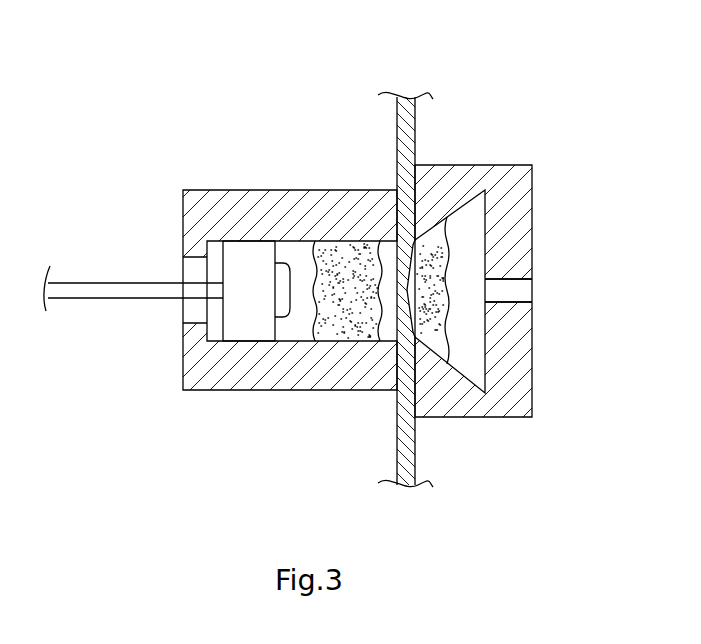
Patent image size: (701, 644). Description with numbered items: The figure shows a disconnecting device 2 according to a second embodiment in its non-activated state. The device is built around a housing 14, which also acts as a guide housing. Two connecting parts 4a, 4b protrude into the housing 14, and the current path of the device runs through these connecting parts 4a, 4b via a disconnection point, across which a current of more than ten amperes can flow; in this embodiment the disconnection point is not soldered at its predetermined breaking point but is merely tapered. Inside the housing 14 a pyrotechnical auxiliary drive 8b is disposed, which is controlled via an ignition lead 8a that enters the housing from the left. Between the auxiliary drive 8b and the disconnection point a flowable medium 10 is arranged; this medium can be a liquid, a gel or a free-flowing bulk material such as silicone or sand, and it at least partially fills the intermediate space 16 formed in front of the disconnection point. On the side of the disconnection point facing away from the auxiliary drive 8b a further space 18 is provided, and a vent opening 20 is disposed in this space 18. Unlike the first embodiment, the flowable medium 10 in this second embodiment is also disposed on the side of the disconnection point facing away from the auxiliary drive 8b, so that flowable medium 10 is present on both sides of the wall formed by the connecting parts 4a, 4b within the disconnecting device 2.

The disconnecting device 2 is at (515, 128).
The connecting part 4a is at (400, 130).
The connecting part 4b is at (400, 450).
The ignition lead 8a is at (95, 288).
The pyrotechnical auxiliary drive 8b is at (255, 250).
The flowable medium 10 is at (350, 250).
The housing 14 is at (225, 375).
The intermediate space 16 is at (305, 318).
The space 18 is at (463, 238).
The vent opening 20 is at (520, 292).